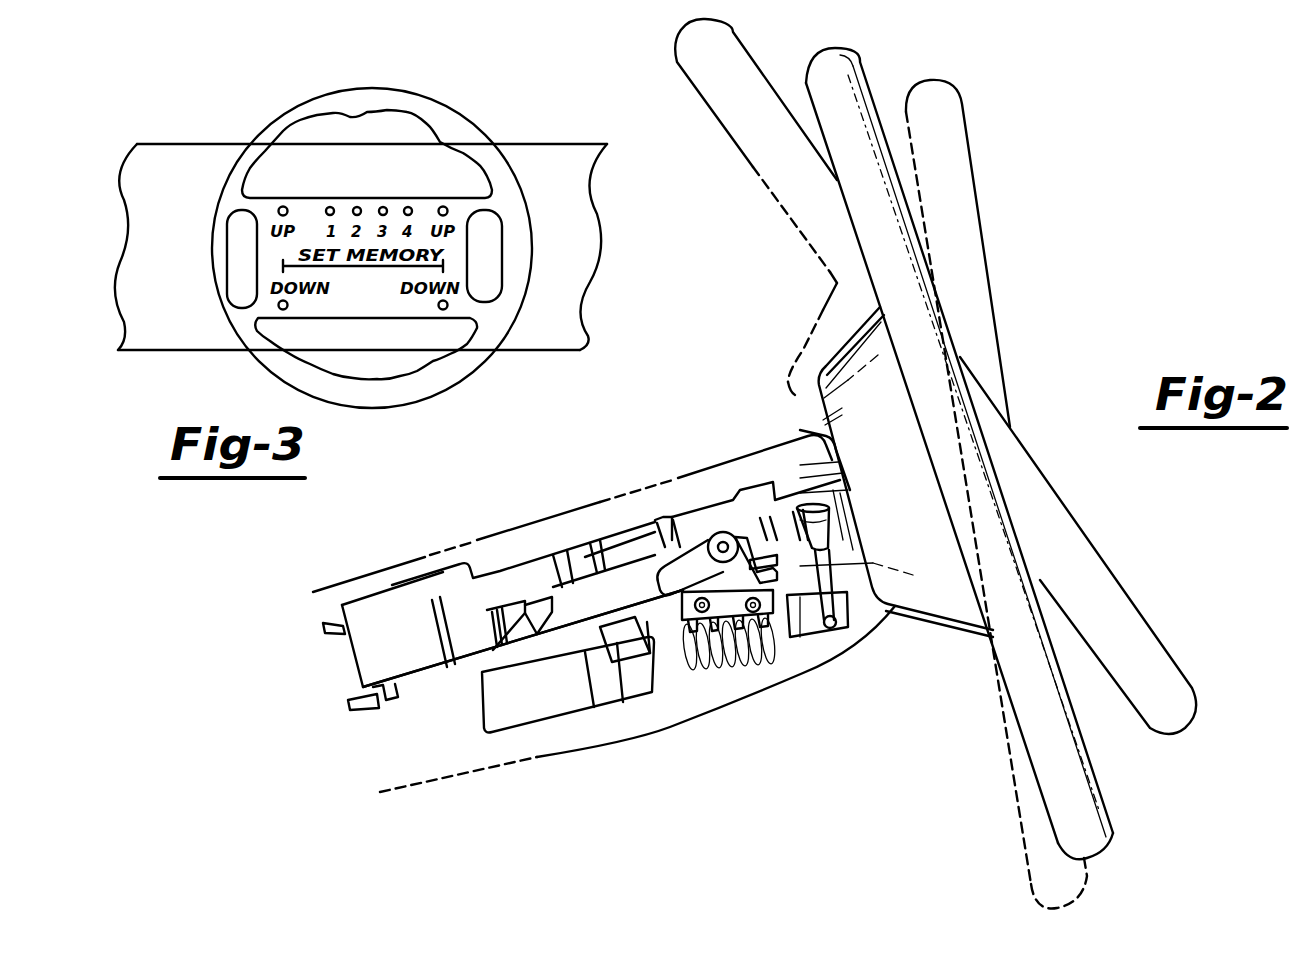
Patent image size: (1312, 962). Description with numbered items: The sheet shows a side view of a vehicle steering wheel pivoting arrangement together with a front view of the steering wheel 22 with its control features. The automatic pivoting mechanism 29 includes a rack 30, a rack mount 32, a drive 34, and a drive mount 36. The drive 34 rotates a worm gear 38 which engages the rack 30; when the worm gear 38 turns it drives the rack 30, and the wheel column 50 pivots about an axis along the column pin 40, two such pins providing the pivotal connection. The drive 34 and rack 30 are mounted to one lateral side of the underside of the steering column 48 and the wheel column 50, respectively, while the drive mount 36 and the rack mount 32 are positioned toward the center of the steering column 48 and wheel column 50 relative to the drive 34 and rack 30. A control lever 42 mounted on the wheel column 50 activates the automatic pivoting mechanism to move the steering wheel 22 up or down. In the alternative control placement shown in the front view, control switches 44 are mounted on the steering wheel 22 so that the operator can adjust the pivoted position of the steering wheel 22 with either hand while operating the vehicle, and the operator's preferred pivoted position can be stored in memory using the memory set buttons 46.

In FIG. 3, the steering wheel 22 is at (434, 119).
In FIG. 2, the steering wheel 22 is at (1092, 833).
In FIG. 2, the automatic pivoting mechanism 29 is at (697, 673).
In FIG. 2, the rack 30 is at (795, 652).
In FIG. 2, the rack mount 32 is at (803, 653).
In FIG. 2, the drive 34 is at (547, 705).
In FIG. 2, the drive mount 36 is at (660, 622).
In FIG. 2, the worm gear 38 is at (747, 650).
In FIG. 2, the column pin 40 is at (717, 533).
In FIG. 2, the control lever 42 is at (830, 525).
In FIG. 3, the control switches 44 is at (279, 213).
In FIG. 3, the memory set buttons 46 is at (408, 207).
In FIG. 2, the steering column 48 is at (498, 565).
In FIG. 2, the wheel column 50 is at (747, 477).